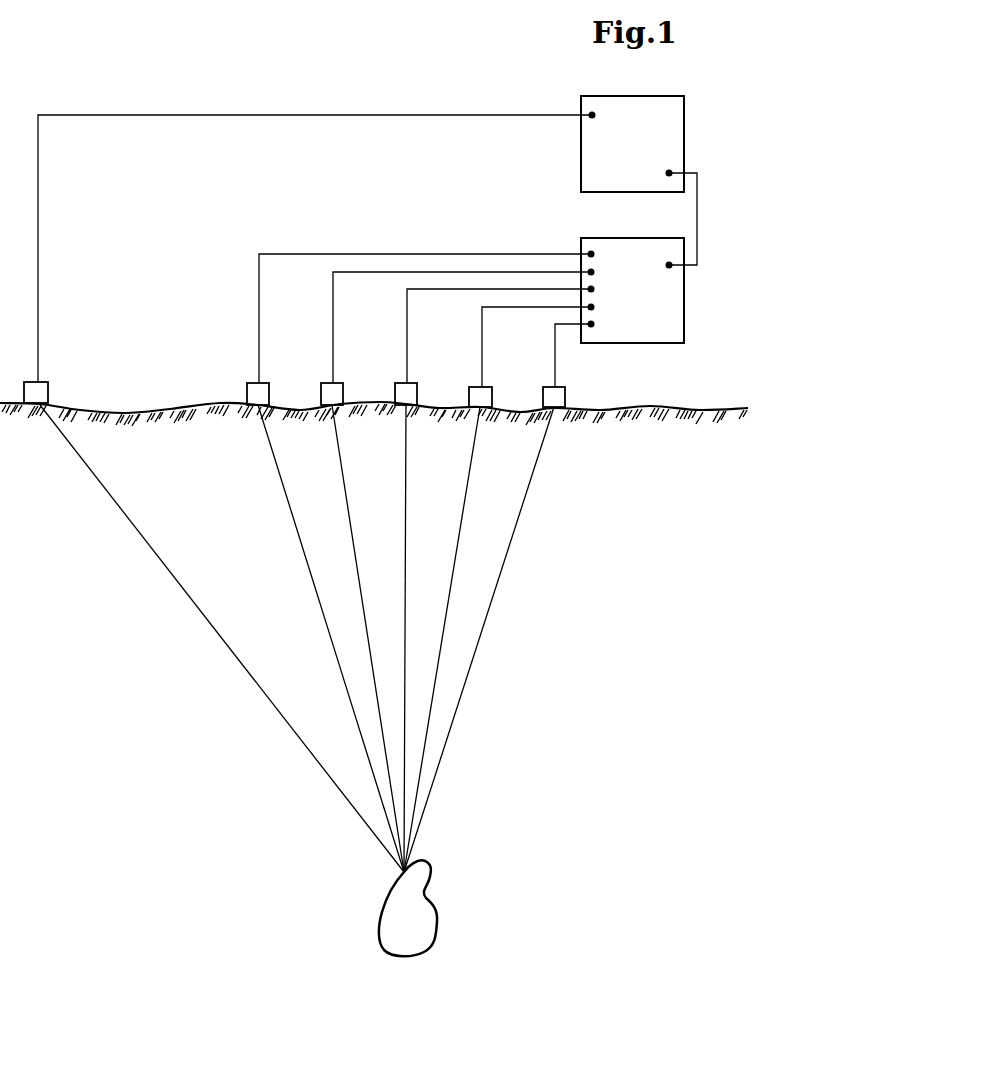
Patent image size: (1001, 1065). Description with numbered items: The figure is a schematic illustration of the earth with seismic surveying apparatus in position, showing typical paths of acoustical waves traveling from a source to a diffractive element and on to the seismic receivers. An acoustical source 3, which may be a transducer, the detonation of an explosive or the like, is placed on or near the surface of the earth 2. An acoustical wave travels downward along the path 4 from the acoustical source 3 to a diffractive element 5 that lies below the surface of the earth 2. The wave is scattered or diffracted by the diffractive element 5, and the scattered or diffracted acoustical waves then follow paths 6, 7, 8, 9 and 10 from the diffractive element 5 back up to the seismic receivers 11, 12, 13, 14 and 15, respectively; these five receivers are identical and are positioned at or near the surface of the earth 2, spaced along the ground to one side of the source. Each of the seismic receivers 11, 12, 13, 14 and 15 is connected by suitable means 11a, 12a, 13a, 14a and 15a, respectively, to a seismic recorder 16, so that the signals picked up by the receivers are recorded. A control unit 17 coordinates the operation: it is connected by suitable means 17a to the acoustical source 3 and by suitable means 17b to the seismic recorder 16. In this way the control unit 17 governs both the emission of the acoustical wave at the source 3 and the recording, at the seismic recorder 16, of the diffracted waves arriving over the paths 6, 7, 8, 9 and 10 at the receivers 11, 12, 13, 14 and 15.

The surface of the earth 2 is at (125, 411).
The acoustical source 3 is at (48, 396).
The path 4 is at (198, 610).
The diffractive element 5 is at (436, 907).
The path 6 is at (315, 582).
The path 7 is at (358, 570).
The path 8 is at (407, 570).
The path 9 is at (453, 583).
The path 10 is at (495, 602).
The seismic receiver 11 is at (269, 392).
The seismic receiver 12 is at (343, 392).
The seismic receiver 13 is at (417, 392).
The seismic receiver 14 is at (492, 394).
The seismic receiver 15 is at (565, 394).
The connecting means 11a is at (259, 312).
The connecting means 12a is at (333, 312).
The connecting means 13a is at (407, 312).
The connecting means 14a is at (482, 312).
The connecting means 15a is at (555, 338).
The seismic recorder 16 is at (684, 298).
The control unit 17 is at (684, 135).
The connecting means 17a is at (247, 115).
The connecting means 17b is at (697, 218).